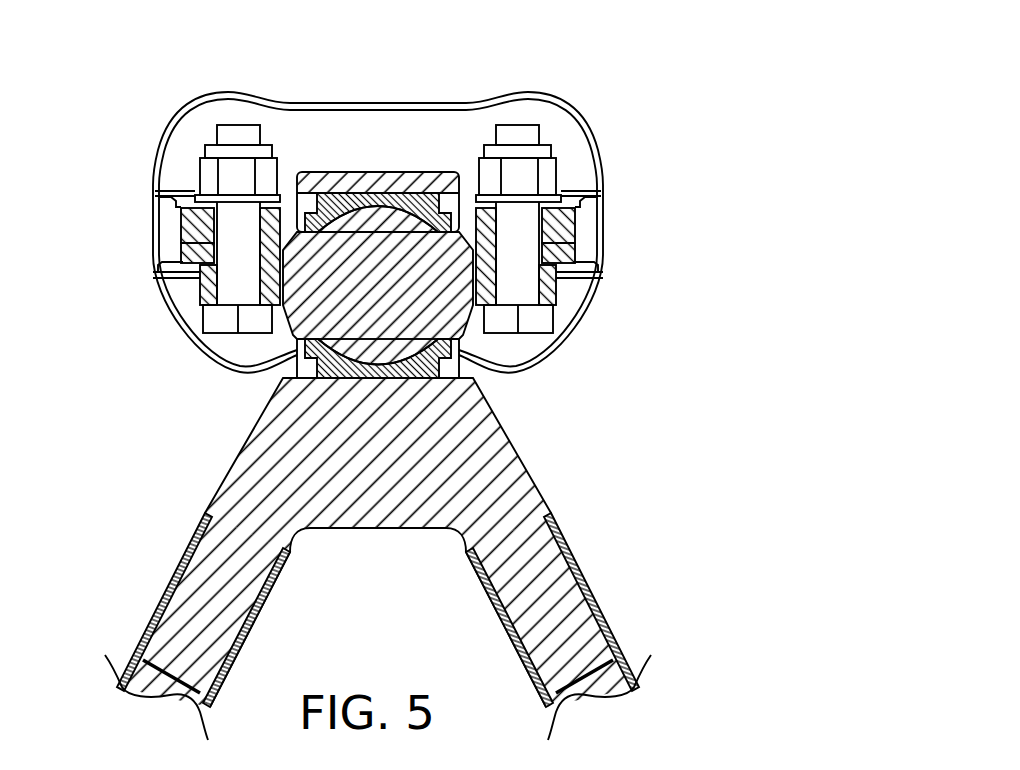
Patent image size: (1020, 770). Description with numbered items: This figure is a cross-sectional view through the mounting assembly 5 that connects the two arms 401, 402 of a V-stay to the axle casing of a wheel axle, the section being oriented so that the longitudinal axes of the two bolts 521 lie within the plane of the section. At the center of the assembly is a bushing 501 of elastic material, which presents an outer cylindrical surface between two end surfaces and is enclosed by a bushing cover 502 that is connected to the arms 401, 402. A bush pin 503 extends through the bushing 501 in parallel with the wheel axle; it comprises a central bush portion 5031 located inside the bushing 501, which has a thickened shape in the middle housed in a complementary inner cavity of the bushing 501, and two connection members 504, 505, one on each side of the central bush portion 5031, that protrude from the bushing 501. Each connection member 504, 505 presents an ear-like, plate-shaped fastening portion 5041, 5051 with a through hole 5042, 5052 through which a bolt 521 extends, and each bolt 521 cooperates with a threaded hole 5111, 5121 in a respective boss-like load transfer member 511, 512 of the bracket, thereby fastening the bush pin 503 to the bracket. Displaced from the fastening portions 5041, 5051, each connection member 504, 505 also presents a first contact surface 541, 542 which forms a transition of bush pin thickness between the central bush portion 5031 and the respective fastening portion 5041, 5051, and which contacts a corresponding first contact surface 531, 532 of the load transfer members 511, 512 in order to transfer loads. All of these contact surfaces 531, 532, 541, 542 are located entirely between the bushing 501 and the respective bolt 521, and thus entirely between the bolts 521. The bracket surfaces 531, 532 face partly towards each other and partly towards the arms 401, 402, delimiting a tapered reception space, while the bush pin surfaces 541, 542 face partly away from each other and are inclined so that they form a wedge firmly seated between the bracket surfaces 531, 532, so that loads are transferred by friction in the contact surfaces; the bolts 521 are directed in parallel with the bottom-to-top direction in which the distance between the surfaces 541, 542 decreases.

The mounting assembly 5 is at (184, 54).
The arm 401 is at (177, 640).
The arm 402 is at (573, 640).
The bushing 501 is at (365, 178).
The bushing cover 502 is at (440, 175).
The bush pin 503 is at (437, 318).
The central bush portion 5031 is at (300, 372).
The connection member 504 is at (197, 286).
The fastening portion 5041 is at (197, 312).
The through hole 5042 is at (210, 330).
The connection member 505 is at (552, 287).
The fastening portion 5051 is at (552, 300).
The through hole 5052 is at (545, 322).
The load transfer member 511 is at (183, 246).
The threaded hole 5111 is at (240, 185).
The load transfer member 512 is at (573, 246).
The threaded hole 5121 is at (512, 200).
The bolt 521 is at (225, 134).
The first contact surface 531 is at (182, 222).
The first contact surface 532 is at (573, 223).
The first contact surface 541 is at (185, 242).
The first contact surface 542 is at (545, 240).